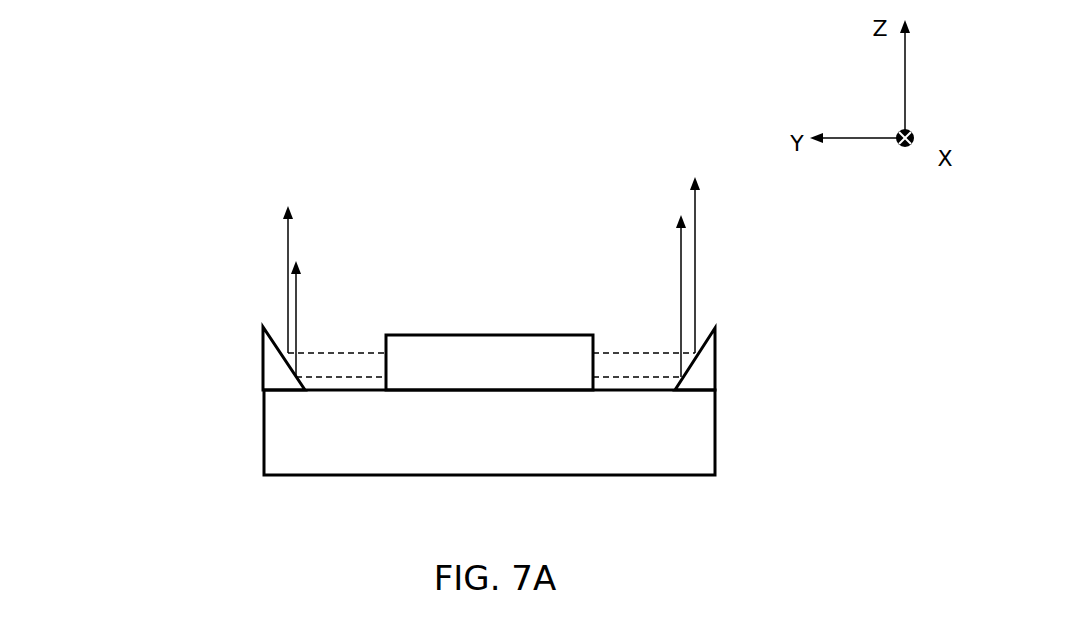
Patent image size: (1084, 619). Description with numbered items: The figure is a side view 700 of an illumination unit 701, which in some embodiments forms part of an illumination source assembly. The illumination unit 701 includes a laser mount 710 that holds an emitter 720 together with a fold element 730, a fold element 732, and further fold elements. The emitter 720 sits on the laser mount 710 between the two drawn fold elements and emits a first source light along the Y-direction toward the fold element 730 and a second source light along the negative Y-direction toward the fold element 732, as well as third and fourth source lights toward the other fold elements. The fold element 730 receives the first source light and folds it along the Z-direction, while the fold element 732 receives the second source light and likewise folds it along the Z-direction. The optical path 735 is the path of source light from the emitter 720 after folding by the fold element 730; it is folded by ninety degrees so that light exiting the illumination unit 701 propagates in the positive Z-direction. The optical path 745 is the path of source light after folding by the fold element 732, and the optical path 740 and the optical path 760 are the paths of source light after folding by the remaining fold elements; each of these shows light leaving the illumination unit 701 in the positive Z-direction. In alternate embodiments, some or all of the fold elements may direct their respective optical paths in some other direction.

The side view 700 is at (73, 94).
The illumination unit 701 is at (112, 229).
The laser mount 710 is at (355, 445).
The emitter 720 is at (481, 328).
The fold element 730 is at (274, 372).
The fold element 732 is at (724, 364).
The optical path 735 is at (287, 242).
The optical path 740 is at (296, 305).
The optical path 745 is at (695, 277).
The optical path 760 is at (681, 303).